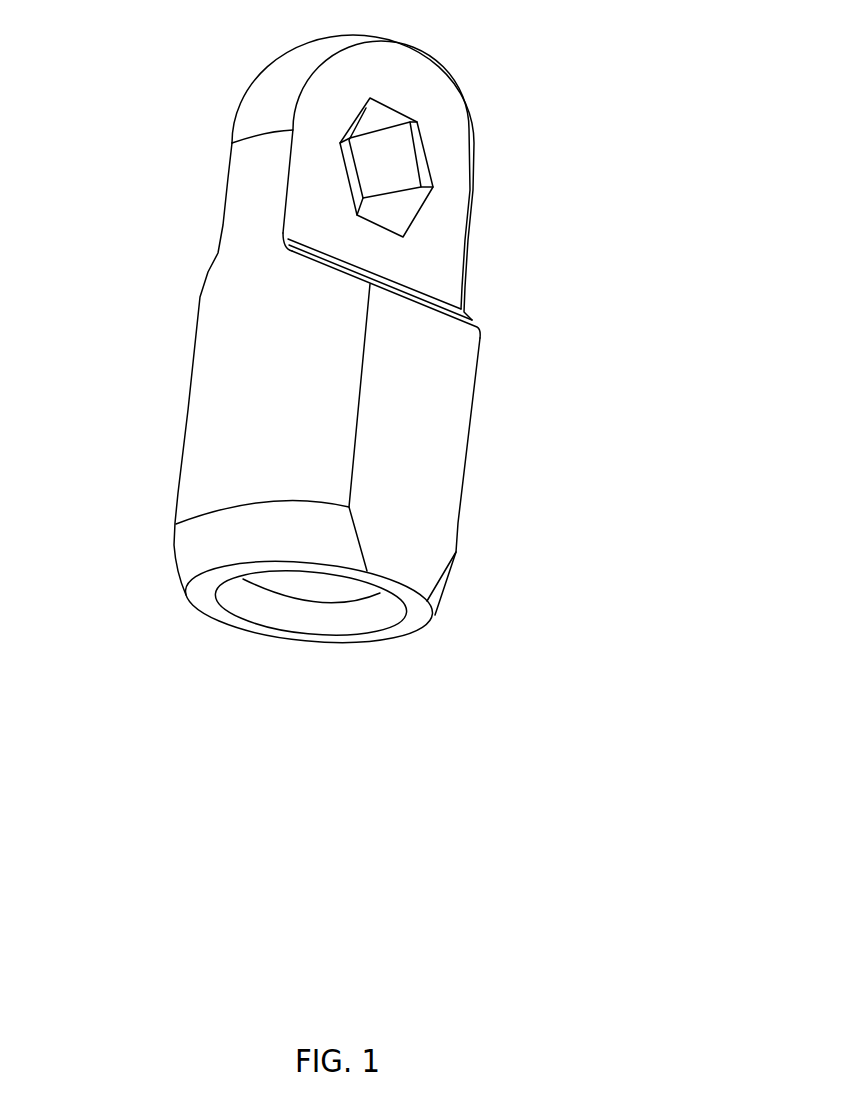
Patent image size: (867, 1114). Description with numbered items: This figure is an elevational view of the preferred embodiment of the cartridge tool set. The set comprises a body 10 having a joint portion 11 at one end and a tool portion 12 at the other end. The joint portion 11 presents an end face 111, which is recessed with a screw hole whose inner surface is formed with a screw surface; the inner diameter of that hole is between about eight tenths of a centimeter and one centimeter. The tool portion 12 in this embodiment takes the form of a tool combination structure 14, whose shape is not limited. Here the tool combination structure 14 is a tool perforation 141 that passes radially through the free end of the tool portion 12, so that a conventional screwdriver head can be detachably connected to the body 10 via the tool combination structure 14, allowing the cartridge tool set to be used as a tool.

The body 10 is at (112, 152).
The joint portion 11 is at (177, 488).
The end face 111 is at (203, 593).
The tool portion 12 is at (450, 270).
The tool combination structure 14 is at (607, 146).
The tool perforation 141 is at (397, 160).